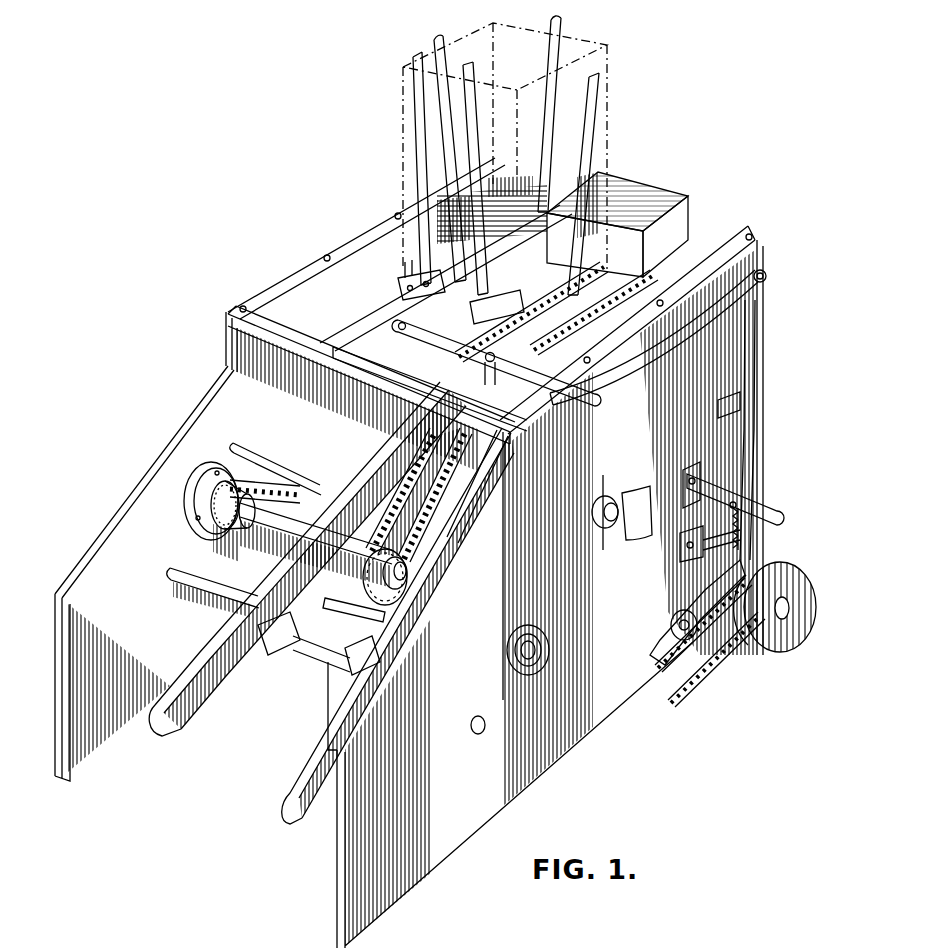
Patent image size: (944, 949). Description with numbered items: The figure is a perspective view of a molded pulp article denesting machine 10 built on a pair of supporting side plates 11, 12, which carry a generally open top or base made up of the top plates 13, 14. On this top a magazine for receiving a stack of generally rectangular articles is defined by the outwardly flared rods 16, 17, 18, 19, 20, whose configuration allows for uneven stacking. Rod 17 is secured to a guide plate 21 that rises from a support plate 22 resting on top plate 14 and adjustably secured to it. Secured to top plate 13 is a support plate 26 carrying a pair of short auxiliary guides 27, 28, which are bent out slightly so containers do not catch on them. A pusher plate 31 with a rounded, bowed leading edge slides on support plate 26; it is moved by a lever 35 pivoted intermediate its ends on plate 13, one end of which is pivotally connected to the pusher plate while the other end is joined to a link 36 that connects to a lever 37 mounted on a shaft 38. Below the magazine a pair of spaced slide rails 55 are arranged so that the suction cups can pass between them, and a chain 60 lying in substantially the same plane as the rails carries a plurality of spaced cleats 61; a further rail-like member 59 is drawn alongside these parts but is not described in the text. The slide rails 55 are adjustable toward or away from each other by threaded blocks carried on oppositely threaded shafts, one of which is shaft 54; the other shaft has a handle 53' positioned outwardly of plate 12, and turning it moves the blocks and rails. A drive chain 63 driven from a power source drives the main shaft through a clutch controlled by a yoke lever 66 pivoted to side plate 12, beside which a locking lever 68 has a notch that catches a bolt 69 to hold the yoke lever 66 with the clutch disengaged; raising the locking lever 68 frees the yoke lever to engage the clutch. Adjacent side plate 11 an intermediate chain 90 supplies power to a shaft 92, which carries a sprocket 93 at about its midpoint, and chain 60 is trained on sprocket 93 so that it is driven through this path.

The denesting machine 10 is at (742, 178).
The side plate 11 is at (205, 392).
The side plate 12 is at (465, 636).
The top plate 13 is at (266, 345).
The top plate 14 is at (690, 248).
The rod 16 is at (436, 40).
The rod 17 is at (565, 24).
The rod 18 is at (598, 83).
The rod 19 is at (488, 47).
The rod 20 is at (414, 60).
The guide plate 21 is at (640, 257).
The support plate 22 is at (668, 240).
The support plate 26 is at (374, 312).
The auxiliary guide 27 is at (500, 318).
The auxiliary guide 28 is at (412, 278).
The pusher plate 31 is at (396, 348).
The lever 35 is at (560, 397).
The link 36 is at (615, 378).
The lever 37 is at (757, 312).
The shaft 38 is at (718, 408).
The handle 53' is at (622, 521).
The shaft 54 is at (308, 647).
The slide rail 55 is at (338, 445).
The side rail 59 is at (336, 692).
The chain 60 is at (372, 518).
The cleat 61 is at (340, 614).
The drive chain 63 is at (682, 695).
The yoke lever 66 is at (763, 492).
The locking lever 68 is at (783, 516).
The bolt 69 is at (772, 505).
The chain 90 is at (250, 462).
The shaft 92 is at (328, 555).
The sprocket 93 is at (400, 550).